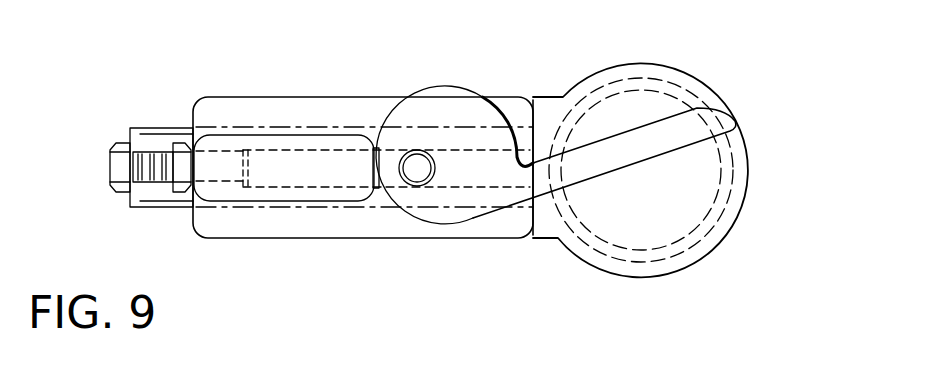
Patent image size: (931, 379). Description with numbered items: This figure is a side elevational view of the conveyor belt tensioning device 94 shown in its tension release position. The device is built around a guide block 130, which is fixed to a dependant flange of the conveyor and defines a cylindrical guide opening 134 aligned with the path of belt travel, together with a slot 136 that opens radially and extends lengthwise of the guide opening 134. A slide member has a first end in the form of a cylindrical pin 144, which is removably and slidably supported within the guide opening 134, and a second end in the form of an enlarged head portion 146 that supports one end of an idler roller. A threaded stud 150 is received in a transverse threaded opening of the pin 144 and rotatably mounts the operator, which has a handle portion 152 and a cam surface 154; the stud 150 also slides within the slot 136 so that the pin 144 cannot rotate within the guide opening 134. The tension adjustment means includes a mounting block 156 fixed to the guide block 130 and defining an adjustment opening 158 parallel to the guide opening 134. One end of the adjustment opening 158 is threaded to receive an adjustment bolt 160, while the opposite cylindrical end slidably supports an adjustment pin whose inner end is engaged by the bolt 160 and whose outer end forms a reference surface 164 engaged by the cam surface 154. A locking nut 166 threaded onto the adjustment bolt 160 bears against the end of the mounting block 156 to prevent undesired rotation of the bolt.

The tensioning device 94 is at (283, 50).
The guide block 130 is at (248, 96).
The guide opening 134 is at (463, 192).
The slot 136 is at (480, 156).
The cylindrical pin 144 is at (153, 128).
The enlarged head portion 146 is at (750, 157).
The threaded stud 150 is at (416, 150).
The handle portion 152 is at (632, 130).
The cam surface 154 is at (388, 117).
The mounting block 156 is at (318, 134).
The adjustment opening 158 is at (284, 179).
The adjustment bolt 160 is at (110, 167).
The reference surface 164 is at (381, 168).
The locking nut 166 is at (180, 188).